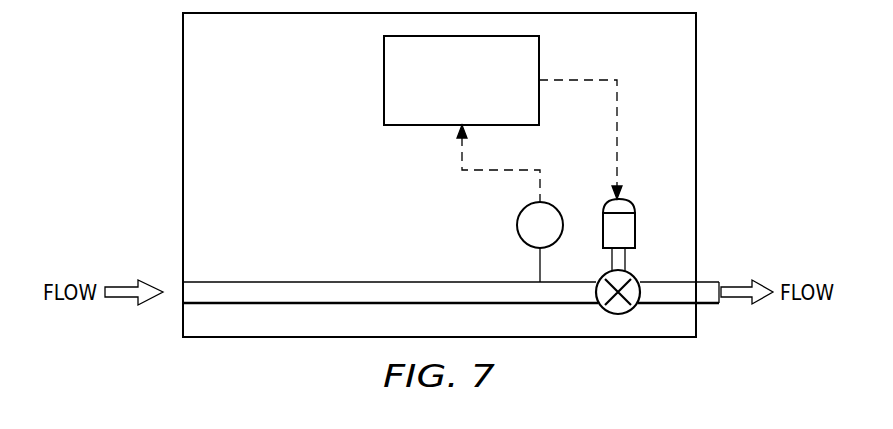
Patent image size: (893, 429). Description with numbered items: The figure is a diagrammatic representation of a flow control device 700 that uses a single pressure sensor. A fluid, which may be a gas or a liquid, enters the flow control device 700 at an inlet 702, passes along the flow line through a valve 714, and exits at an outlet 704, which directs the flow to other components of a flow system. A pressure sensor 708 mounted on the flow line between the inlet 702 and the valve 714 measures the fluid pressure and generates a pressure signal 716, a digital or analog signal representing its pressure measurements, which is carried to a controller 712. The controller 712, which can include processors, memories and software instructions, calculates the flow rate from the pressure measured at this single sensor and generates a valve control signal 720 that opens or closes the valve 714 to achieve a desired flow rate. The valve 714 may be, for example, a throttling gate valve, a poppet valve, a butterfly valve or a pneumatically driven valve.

The flow control device 700 is at (281, 70).
The inlet 702 is at (173, 297).
The outlet 704 is at (707, 305).
The pressure sensor 708 is at (556, 209).
The controller 712 is at (483, 93).
The valve 714 is at (632, 274).
The pressure signal 716 is at (489, 171).
The valve control signal 720 is at (590, 80).